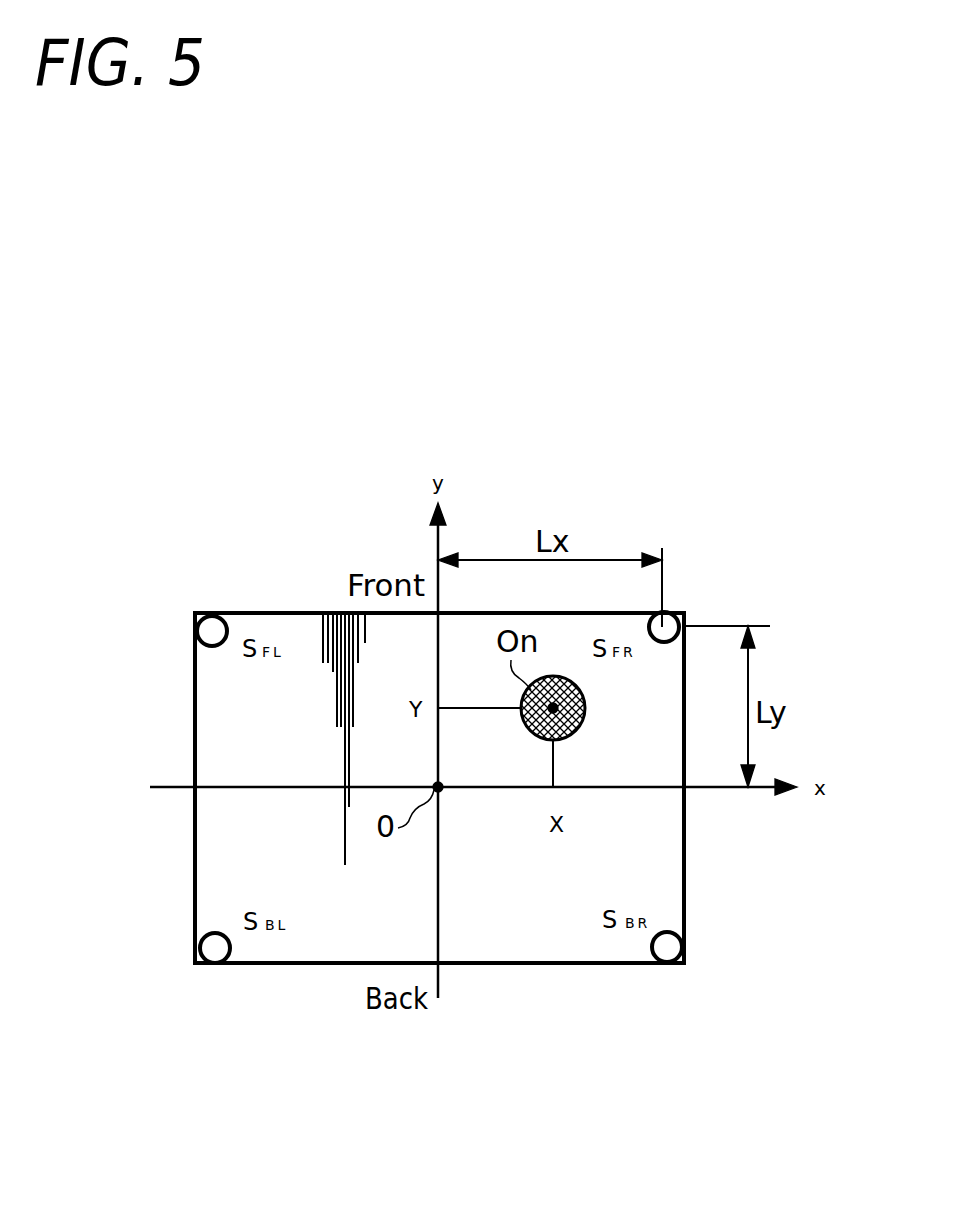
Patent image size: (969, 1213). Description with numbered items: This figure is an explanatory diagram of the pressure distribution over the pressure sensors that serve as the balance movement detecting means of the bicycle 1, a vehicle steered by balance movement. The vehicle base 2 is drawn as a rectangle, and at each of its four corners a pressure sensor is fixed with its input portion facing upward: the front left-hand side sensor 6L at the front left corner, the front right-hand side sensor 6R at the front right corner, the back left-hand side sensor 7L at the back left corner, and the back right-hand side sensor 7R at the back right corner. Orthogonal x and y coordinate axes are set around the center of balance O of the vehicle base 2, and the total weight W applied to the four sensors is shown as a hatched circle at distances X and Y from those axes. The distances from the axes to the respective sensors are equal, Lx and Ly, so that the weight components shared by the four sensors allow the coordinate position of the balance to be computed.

The bicycle 1 is at (248, 521).
The vehicle base 2 is at (194, 678).
The front left-hand side sensor 6L is at (211, 621).
The front right-hand side sensor 6R is at (675, 621).
The back left-hand side sensor 7L is at (212, 956).
The back right-hand side sensor 7R is at (665, 954).
The total weight W is at (590, 716).